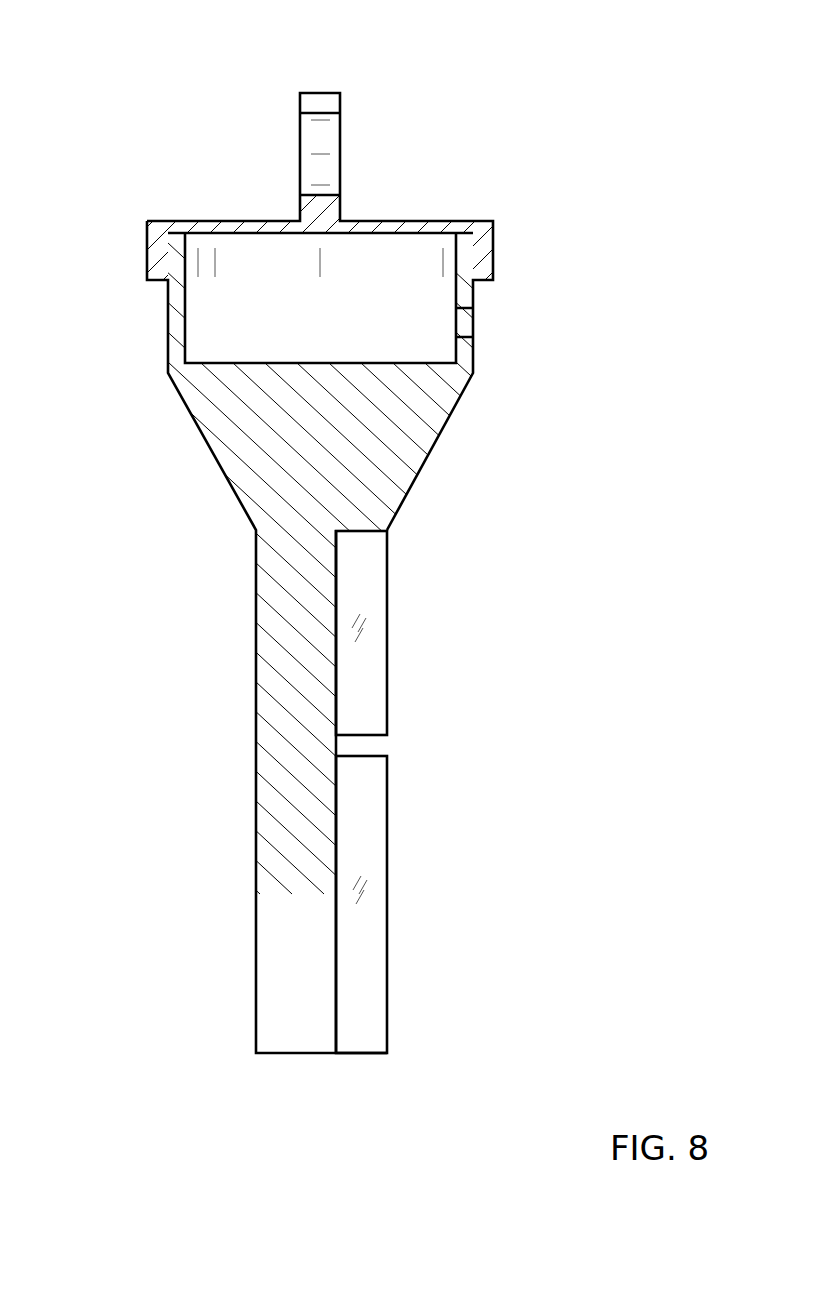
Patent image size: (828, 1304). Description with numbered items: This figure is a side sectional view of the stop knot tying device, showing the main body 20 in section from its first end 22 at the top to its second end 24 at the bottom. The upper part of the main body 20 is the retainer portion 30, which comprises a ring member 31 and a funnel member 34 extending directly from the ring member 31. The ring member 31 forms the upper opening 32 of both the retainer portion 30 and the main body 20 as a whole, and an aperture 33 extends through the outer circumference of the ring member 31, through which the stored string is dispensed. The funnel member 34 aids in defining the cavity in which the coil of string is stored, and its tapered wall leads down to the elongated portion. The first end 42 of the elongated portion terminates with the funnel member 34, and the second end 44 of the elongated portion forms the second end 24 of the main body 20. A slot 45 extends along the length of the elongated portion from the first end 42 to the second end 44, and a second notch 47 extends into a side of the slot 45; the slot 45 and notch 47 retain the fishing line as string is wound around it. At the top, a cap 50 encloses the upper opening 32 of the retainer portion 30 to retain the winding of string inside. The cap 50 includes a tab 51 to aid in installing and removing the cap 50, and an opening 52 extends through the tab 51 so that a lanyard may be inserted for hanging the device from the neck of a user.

The main body 20 is at (256, 766).
The first end 22 is at (465, 247).
The second end 24 is at (296, 1053).
The retainer portion 30 is at (167, 303).
The ring member 31 is at (475, 346).
The upper opening 32 is at (240, 314).
The aperture 33 is at (467, 325).
The funnel member 34 is at (434, 448).
The first end of elongated portion 42 is at (390, 537).
The second end of elongated portion 44 is at (389, 1035).
The slot 45 is at (362, 812).
The second notch 47 is at (362, 738).
The cap 50 is at (233, 220).
The tab 51 is at (322, 93).
The opening 52 is at (327, 128).